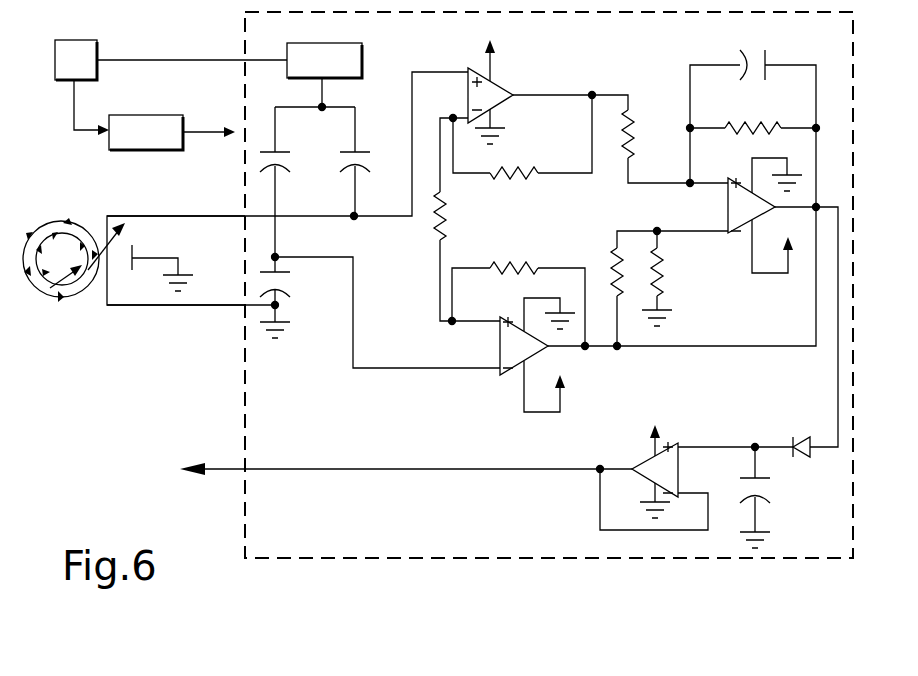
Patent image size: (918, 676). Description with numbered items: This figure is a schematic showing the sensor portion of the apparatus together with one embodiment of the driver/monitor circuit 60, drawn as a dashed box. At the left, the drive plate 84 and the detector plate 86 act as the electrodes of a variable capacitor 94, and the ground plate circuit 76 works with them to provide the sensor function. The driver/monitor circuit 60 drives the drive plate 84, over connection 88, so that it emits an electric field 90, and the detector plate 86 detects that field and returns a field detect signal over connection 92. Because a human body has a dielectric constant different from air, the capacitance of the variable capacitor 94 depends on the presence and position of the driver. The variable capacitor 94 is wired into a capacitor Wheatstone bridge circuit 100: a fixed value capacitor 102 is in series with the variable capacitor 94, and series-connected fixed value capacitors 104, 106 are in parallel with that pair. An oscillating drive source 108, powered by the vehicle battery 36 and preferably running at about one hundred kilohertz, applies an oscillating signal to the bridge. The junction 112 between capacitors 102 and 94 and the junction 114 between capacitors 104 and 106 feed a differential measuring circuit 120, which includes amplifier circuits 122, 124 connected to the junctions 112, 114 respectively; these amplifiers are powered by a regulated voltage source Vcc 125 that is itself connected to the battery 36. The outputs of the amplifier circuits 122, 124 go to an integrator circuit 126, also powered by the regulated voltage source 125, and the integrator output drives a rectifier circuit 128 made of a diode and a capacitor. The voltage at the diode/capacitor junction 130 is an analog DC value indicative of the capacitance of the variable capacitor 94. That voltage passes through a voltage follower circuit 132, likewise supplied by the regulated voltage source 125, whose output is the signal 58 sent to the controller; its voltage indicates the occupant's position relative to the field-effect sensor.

The vehicle battery 36 is at (82, 44).
The regulated voltage source Vcc 125 is at (155, 116).
The oscillating drive source 108 is at (362, 62).
The fixed value capacitor 104 is at (282, 152).
The fixed value capacitor 102 is at (360, 156).
The junction 112 is at (352, 214).
The junction 114 is at (278, 256).
The fixed value capacitor 106 is at (288, 296).
The capacitor Wheatstone bridge circuit 100 is at (313, 340).
The connection 88 is at (181, 214).
The electric field 90 is at (53, 215).
The variable capacitor 94 is at (57, 289).
The drive plate 84 is at (90, 250).
The detector plate 86 is at (111, 268).
The ground plate circuit 76 is at (139, 252).
The connection 92 is at (242, 303).
The amplifier circuit 122 is at (510, 63).
The amplifier circuit 124 is at (476, 348).
The differential measuring circuit 120 is at (586, 410).
The integrator circuit 126 is at (676, 78).
The rectifier circuit 128 is at (806, 422).
The diode/capacitor junction 130 is at (755, 444).
The voltage follower circuit 132 is at (628, 457).
The signal 58 is at (228, 466).
The driver/monitor circuit 60 is at (670, 565).